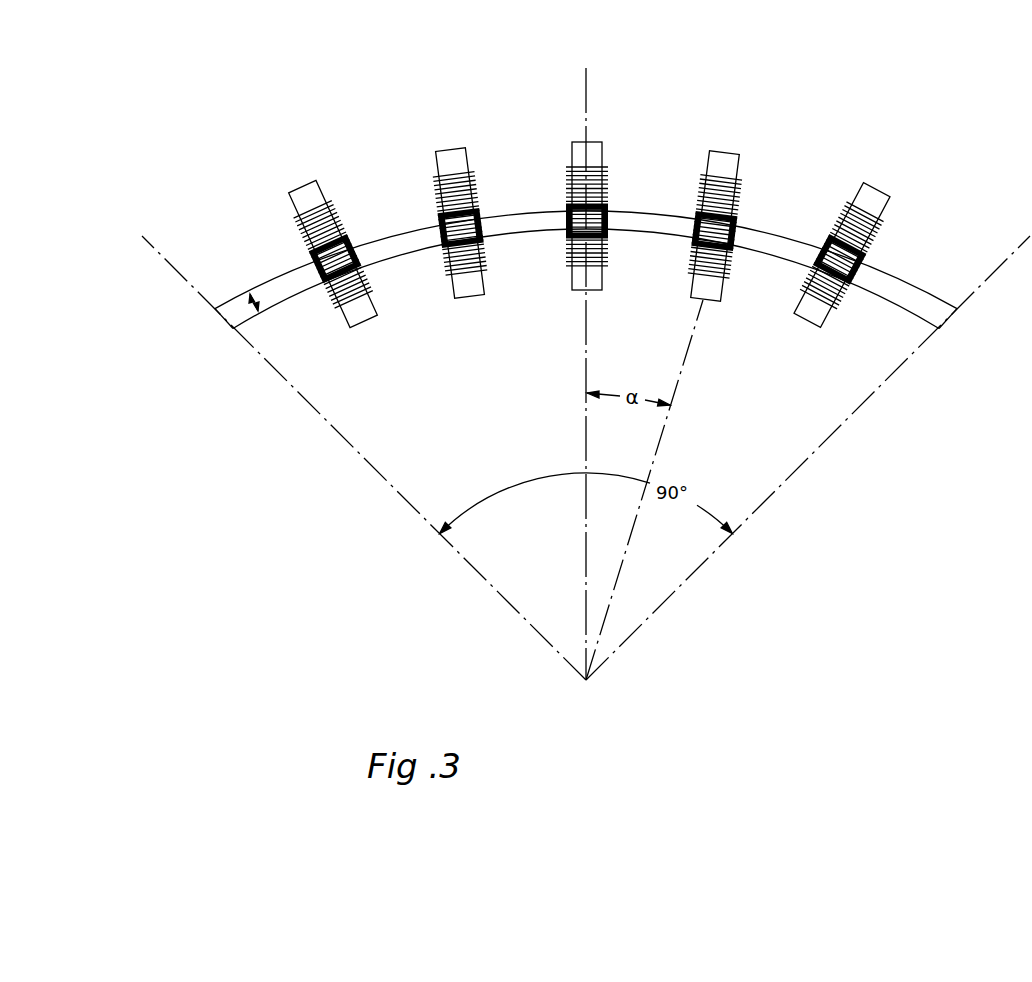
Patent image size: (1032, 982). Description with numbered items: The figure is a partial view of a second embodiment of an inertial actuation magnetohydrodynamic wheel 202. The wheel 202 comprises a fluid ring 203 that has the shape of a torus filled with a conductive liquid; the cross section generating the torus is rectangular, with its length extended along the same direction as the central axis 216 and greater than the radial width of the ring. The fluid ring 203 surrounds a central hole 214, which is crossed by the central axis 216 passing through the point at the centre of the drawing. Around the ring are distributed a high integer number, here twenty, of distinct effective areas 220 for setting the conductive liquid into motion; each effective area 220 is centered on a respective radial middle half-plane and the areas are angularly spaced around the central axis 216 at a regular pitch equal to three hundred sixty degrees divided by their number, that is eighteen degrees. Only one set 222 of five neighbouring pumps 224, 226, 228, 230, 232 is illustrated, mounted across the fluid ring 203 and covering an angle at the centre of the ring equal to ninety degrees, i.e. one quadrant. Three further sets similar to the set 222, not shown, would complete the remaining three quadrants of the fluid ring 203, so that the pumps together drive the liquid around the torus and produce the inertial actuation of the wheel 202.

The inertial actuation magnetohydrodynamic wheel 202 is at (267, 142).
The fluid ring 203 is at (428, 253).
The central hole 214 is at (436, 410).
The central axis 216 is at (583, 683).
The effective area 220 is at (342, 257).
The set of pumps 222 is at (518, 128).
The pump 224 is at (308, 196).
The pump 226 is at (452, 293).
The pump 228 is at (572, 276).
The pump 230 is at (690, 283).
The pump 232 is at (797, 303).